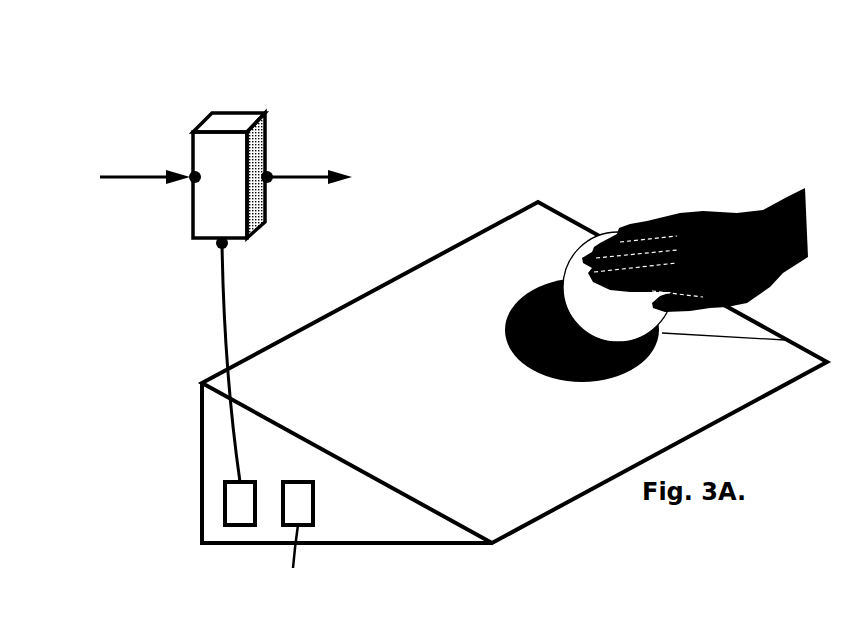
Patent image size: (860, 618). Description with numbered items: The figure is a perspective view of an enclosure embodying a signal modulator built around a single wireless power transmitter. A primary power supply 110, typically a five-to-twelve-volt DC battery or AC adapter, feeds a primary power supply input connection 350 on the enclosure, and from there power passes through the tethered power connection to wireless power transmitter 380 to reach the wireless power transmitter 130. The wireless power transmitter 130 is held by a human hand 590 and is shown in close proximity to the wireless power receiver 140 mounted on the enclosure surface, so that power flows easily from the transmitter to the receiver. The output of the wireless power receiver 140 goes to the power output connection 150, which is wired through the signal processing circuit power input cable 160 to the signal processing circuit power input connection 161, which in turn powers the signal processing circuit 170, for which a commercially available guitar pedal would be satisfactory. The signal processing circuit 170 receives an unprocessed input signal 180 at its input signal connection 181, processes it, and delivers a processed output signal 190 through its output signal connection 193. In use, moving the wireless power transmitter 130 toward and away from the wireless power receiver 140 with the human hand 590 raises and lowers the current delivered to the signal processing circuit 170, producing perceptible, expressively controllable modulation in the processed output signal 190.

The primary power supply 110 is at (290, 565).
The wireless power transmitter 130 is at (577, 263).
The wireless power receiver 140 is at (528, 368).
The power output connection 150 is at (223, 503).
The signal processing circuit power input cable 160 is at (233, 313).
The signal processing circuit power input connection 161 is at (220, 247).
The signal processing circuit 170 is at (232, 123).
The unprocessed input signal 180 is at (142, 168).
The input signal connection 181 is at (190, 176).
The processed output signal 190 is at (309, 168).
The output signal connection 193 is at (273, 167).
The primary power supply input connection 350 is at (298, 482).
The tethered power connection to wireless power transmitter 380 is at (738, 342).
The human hand 590 is at (680, 215).